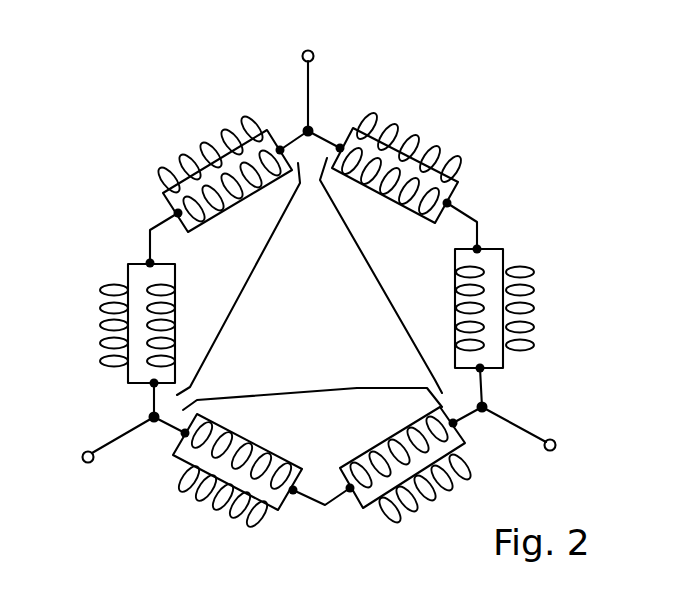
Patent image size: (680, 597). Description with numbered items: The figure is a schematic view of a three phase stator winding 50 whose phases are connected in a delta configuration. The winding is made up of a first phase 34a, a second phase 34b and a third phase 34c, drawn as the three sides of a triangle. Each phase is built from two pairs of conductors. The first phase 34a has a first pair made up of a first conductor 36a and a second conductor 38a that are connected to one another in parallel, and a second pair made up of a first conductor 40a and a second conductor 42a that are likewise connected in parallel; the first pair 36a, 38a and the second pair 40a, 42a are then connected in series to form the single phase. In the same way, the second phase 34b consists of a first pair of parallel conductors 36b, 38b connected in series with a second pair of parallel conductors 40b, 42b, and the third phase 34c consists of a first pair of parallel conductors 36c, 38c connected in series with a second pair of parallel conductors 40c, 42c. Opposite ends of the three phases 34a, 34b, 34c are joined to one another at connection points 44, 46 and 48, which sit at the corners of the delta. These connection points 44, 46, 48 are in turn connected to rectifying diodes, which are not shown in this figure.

The first phase 34a is at (373, 268).
The second phase 34b is at (228, 319).
The third phase 34c is at (309, 393).
The first conductor 36a is at (417, 128).
The first conductor 36b is at (220, 130).
The first conductor 36c is at (190, 470).
The second conductor 38a is at (402, 173).
The second conductor 38b is at (200, 142).
The second conductor 38c is at (235, 457).
The first conductor 40a is at (535, 283).
The first conductor 40b is at (100, 290).
The first conductor 40c is at (452, 462).
The second conductor 42a is at (480, 327).
The second conductor 42b is at (170, 322).
The second conductor 42c is at (392, 467).
The connection point 44 is at (313, 53).
The connection point 46 is at (90, 448).
The connection point 48 is at (547, 437).
The stator winding 50 is at (130, 534).